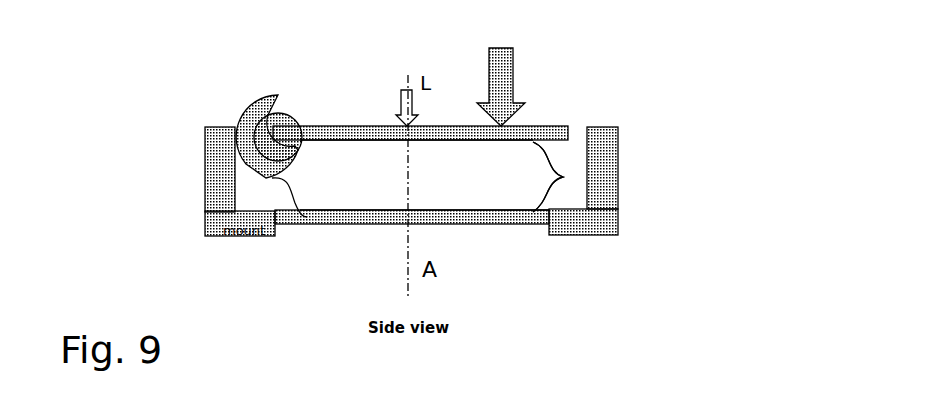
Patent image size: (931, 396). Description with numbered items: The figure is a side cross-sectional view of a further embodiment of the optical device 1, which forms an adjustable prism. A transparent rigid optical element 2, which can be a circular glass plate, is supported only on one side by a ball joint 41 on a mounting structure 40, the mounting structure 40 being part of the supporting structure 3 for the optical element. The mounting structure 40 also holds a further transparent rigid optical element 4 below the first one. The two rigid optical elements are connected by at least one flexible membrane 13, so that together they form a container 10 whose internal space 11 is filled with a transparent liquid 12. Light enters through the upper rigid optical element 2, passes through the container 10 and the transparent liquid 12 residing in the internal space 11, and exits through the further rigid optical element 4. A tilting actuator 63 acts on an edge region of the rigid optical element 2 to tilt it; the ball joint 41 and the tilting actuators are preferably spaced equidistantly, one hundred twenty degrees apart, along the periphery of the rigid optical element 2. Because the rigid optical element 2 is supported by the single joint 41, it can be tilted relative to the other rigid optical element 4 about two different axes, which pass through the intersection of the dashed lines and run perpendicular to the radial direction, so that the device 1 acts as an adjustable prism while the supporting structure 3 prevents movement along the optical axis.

The optical device 1 is at (660, 103).
The transparent rigid optical element 2 is at (360, 130).
The supporting structure 3 is at (200, 152).
The further transparent rigid optical element 4 is at (358, 215).
The container 10 is at (553, 191).
The internal space 11 is at (483, 187).
The transparent liquid 12 is at (383, 198).
The flexible membrane 13 is at (553, 150).
The mounting structure 40 is at (215, 173).
The ball joint 41 is at (267, 137).
The tilting actuator 63 is at (513, 90).